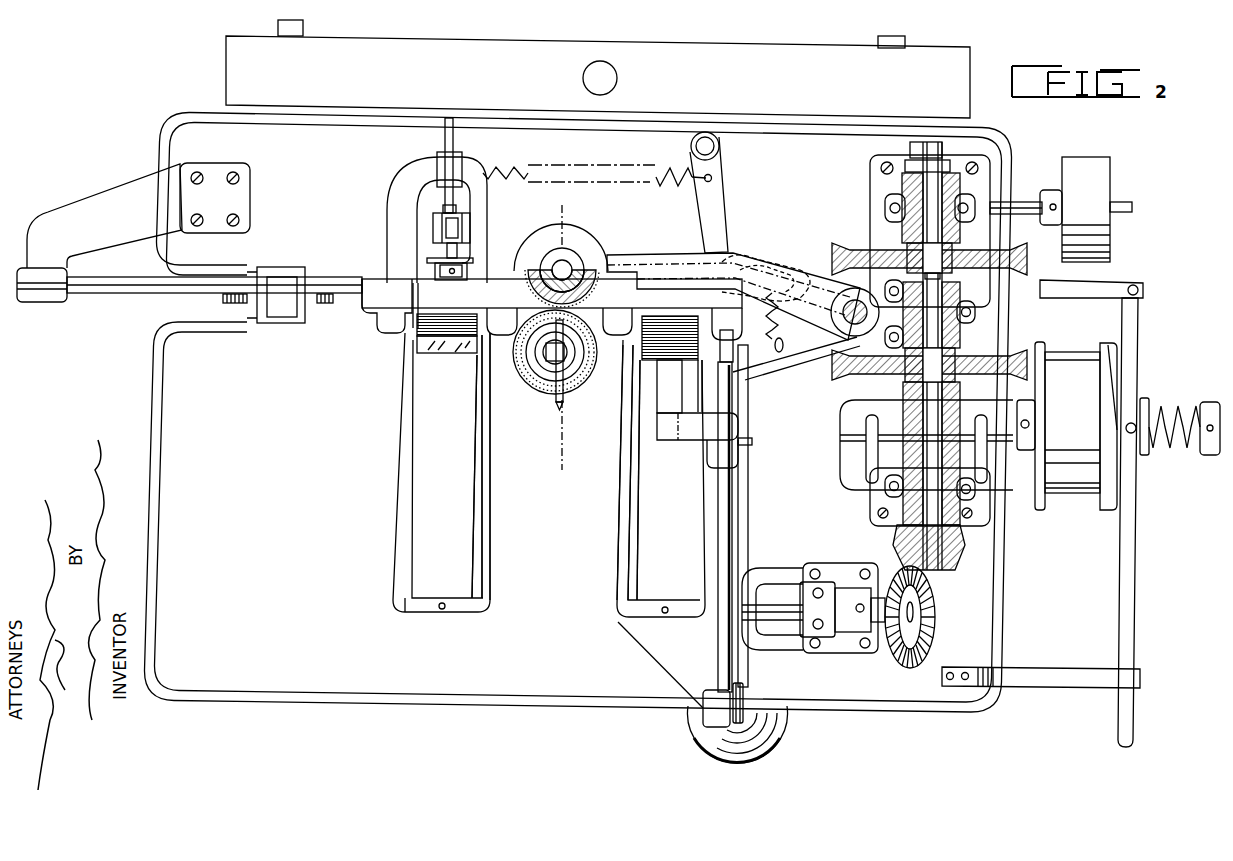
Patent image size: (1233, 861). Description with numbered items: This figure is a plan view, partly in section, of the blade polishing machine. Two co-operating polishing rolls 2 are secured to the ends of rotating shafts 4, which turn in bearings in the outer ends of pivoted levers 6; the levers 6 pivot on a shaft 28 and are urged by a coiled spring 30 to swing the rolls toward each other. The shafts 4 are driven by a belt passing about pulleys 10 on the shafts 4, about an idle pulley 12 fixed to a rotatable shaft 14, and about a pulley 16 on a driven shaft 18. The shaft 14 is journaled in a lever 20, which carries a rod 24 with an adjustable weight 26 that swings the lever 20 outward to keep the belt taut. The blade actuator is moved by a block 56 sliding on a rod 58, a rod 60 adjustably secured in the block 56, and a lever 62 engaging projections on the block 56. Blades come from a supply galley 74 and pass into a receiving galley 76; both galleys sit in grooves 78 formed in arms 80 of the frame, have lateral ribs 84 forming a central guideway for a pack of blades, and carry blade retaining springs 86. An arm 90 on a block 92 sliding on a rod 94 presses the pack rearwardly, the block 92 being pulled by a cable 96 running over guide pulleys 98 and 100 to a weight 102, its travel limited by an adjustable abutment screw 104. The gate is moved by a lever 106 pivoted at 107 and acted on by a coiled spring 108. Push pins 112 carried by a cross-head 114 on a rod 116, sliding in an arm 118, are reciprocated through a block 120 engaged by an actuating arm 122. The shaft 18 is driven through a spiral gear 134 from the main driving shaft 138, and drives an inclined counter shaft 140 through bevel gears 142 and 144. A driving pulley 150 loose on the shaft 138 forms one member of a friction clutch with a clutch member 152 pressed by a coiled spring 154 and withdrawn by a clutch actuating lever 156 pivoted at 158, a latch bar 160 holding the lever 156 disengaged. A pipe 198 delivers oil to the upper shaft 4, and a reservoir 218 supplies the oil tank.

The polishing rolls 2 is at (520, 268).
The rotating shafts 4 is at (566, 256).
The pivoted levers 6 is at (642, 262).
The pulleys 10 is at (562, 208).
The idle pulley 12 is at (833, 245).
The rotatable shaft 14 is at (925, 187).
The pulley 16 is at (1013, 350).
The driven shaft 18 is at (928, 294).
The lever 20 is at (890, 208).
The rod 24 is at (1020, 200).
The weight 26 is at (1083, 157).
The shaft 28 is at (853, 300).
The coiled spring 30 is at (788, 348).
The block 56 is at (303, 318).
The rod 58 is at (147, 296).
The rod 60 is at (225, 300).
The lever 62 is at (275, 323).
The supply galley 74 is at (633, 439).
The receiving galley 76 is at (412, 422).
The grooves 78 is at (488, 492).
The arms 80 is at (485, 530).
The lateral ribs 84 is at (478, 575).
The blade retaining springs 86 is at (425, 350).
The arm 90 is at (672, 398).
The block 92 is at (742, 418).
The rod 94 is at (732, 478).
The cable 96 is at (748, 513).
The guide pulley 98 is at (745, 268).
The guide pulley 100 is at (746, 690).
The weight 102 is at (790, 737).
The adjustable abutment screw 104 is at (778, 345).
The lever 106 is at (718, 192).
The pivot 107 is at (712, 134).
The coiled spring 108 is at (668, 162).
The push pins 112 is at (440, 268).
The cross-head 114 is at (445, 258).
The rod 116 is at (455, 207).
The arm 118 is at (440, 162).
The block 120 is at (462, 230).
The actuating arm 122 is at (435, 227).
The spiral gear 134 is at (885, 410).
The main driving shaft 138 is at (1152, 455).
The inclined counter shaft 140 is at (780, 574).
The bevel gear 142 is at (937, 616).
The bevel gear 144 is at (960, 558).
The driving pulley 150 is at (1057, 345).
The clutch member 152 is at (1112, 357).
The coiled spring 154 is at (1175, 400).
The clutch actuating lever 156 is at (1130, 521).
The pivot 158 is at (1138, 287).
The latch bar 160 is at (1040, 667).
The pipe 198 is at (565, 400).
The reservoir 218 is at (658, 50).